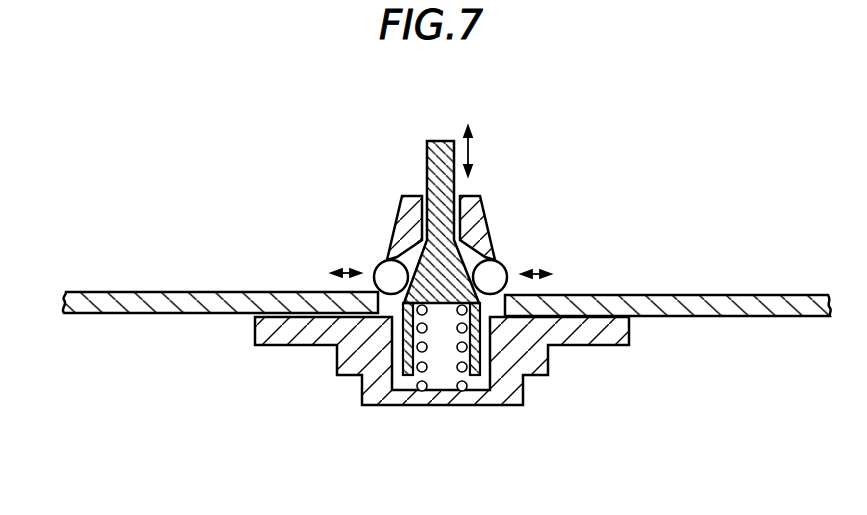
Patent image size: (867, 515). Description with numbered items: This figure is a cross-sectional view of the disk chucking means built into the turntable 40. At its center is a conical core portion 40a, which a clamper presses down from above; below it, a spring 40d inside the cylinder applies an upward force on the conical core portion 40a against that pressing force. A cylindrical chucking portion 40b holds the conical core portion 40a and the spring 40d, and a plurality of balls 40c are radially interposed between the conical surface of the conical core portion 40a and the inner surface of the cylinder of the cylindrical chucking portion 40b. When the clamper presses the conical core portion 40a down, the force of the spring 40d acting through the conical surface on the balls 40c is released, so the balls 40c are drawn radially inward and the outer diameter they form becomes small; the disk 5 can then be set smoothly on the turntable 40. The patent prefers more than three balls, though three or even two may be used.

The disk 5 is at (680, 300).
The turntable 40 is at (629, 339).
The conical core portion 40a is at (440, 140).
The cylindrical chucking portion 40b is at (479, 222).
The balls 40c is at (505, 264).
The spring 40d is at (463, 370).